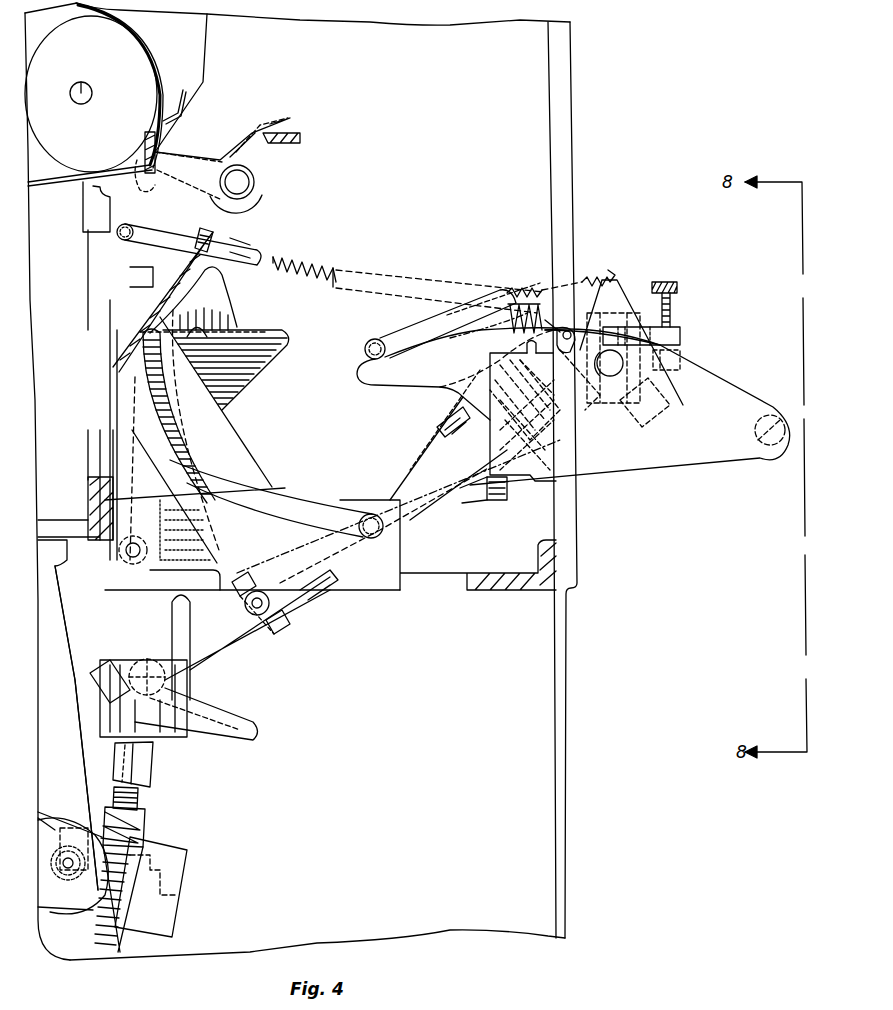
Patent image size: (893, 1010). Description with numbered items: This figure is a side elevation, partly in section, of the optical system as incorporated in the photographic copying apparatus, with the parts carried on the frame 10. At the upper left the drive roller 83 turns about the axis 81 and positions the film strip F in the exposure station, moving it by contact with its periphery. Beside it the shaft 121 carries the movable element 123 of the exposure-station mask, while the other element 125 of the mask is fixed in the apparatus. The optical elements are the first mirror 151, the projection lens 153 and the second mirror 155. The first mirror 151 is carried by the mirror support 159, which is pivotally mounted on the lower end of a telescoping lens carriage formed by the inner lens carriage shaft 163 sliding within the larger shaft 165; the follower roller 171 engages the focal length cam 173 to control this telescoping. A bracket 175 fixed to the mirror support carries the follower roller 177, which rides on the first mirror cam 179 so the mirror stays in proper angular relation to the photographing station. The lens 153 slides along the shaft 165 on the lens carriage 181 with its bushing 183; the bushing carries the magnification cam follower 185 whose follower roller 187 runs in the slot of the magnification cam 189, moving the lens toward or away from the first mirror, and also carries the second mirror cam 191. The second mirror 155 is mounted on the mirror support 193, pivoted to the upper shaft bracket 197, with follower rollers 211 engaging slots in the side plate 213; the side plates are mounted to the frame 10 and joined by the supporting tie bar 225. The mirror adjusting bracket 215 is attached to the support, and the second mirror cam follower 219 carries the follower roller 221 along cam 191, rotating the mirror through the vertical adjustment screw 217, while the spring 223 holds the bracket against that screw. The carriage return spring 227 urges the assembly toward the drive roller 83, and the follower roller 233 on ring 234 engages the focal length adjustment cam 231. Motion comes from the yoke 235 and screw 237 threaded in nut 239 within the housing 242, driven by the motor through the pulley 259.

The frame 10 is at (560, 735).
The drive roller 83 is at (95, 59).
The axis 81 is at (89, 88).
The film strip F is at (54, 180).
The other element of the mask 125 is at (177, 93).
The movable element of the mask 123 is at (157, 151).
The shaft 121 is at (258, 182).
The first mirror cam 179 is at (213, 231).
The carriage return spring 227 is at (300, 258).
The focal length cam 173 is at (222, 302).
The focal length adjustment cam 231 is at (283, 336).
The magnification cam 189 is at (231, 440).
The follower roller 221 is at (373, 339).
The second mirror cam follower 219 is at (406, 340).
The second mirror cam 191 is at (437, 378).
The magnification cam follower 185 is at (428, 464).
The follower roller 187 is at (368, 512).
The projection lens 153 is at (497, 502).
The lens carriage 181 is at (565, 470).
The second mirror 155 is at (612, 405).
The bushing 183 is at (570, 440).
The upper shaft bracket 197 is at (640, 425).
The side plate 213 is at (625, 466).
The supporting tie bar 225 is at (764, 445).
The follower roller 211 is at (655, 345).
The mirror support 193 is at (680, 330).
The vertical adjustment screw 217 is at (663, 282).
The mirror adjusting bracket 215 is at (620, 286).
The spring 223 is at (521, 296).
The follower roller 177 is at (125, 540).
The bracket 175 is at (147, 613).
The first mirror 151 is at (107, 660).
The follower roller 171 is at (105, 690).
The mirror support 159 is at (256, 733).
The inner telescoping lens carriage shaft 163 is at (212, 657).
The outer lens carriage shaft 165 is at (305, 598).
The follower roller 233 is at (258, 616).
The ring 234 is at (280, 626).
The yoke 235 is at (152, 762).
The screw 237 is at (138, 799).
The nut 239 is at (145, 825).
The housing 242 is at (177, 866).
The pulley 259 is at (64, 900).